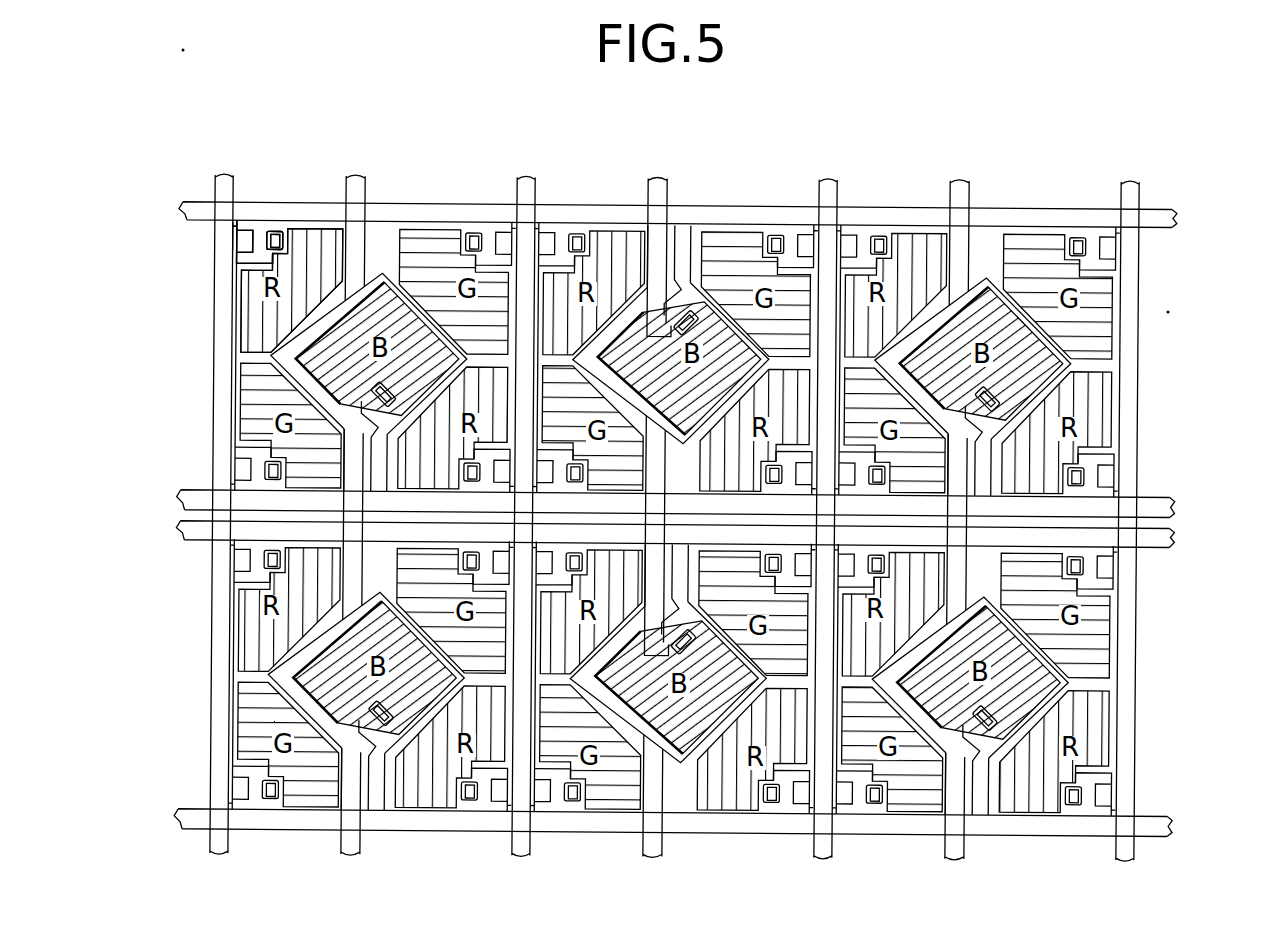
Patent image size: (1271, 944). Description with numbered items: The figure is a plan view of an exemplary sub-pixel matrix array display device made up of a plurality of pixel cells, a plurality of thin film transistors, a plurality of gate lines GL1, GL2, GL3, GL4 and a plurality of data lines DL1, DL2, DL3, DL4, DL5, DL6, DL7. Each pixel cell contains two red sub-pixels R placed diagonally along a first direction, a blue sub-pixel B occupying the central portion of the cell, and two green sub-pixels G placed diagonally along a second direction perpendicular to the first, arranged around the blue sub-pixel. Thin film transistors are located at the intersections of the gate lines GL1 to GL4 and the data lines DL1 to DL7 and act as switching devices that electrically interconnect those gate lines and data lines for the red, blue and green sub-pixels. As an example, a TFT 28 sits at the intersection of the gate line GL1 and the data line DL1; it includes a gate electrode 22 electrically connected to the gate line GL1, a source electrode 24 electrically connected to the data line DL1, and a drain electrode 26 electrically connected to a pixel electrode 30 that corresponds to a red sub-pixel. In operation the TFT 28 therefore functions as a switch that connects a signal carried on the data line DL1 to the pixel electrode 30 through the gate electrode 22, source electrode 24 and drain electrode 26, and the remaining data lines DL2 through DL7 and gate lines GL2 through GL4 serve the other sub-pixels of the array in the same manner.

The gate electrode 22 is at (258, 254).
The source electrode 24 is at (236, 244).
The drain electrode 26 is at (281, 231).
The TFT 28 is at (222, 233).
The pixel electrode 30 is at (243, 302).
The data line DL1 is at (204, 496).
The data line DL2 is at (358, 496).
The data line DL3 is at (513, 497).
The data line DL4 is at (669, 499).
The data line DL5 is at (826, 499).
The data line DL6 is at (958, 500).
The data line DL7 is at (1118, 500).
The gate line GL1 is at (1175, 220).
The gate line GL2 is at (1175, 509).
The gate line GL3 is at (1175, 540).
The gate line GL4 is at (1175, 827).